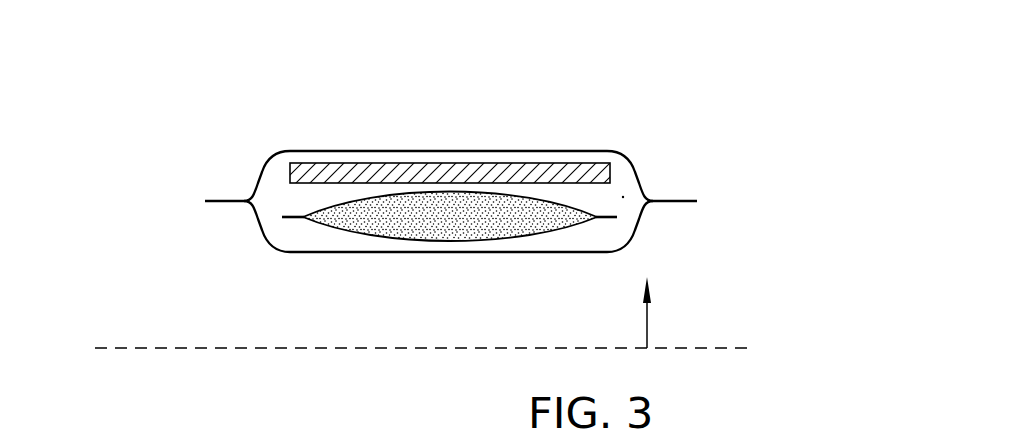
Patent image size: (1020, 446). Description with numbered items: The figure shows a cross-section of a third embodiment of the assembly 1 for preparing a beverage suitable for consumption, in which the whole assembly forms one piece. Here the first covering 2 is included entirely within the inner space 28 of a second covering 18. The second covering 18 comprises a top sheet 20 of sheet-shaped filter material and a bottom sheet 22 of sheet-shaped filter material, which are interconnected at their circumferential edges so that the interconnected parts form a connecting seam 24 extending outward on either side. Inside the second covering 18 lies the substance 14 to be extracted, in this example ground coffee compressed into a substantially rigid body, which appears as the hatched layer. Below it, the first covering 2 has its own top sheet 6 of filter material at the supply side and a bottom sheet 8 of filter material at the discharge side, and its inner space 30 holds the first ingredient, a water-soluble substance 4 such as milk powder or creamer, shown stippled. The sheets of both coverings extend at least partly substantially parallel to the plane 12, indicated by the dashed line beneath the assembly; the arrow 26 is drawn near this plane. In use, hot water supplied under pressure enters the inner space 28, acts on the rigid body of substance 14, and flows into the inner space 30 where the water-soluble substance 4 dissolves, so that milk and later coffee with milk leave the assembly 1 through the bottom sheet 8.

The assembly 1 is at (765, 313).
The first covering 2 is at (573, 227).
The water-soluble substance 4 is at (515, 222).
The top sheet 6 is at (318, 209).
The bottom sheet 8 is at (328, 226).
The plane 12 is at (357, 349).
The substance to be extracted 14 is at (317, 172).
The second covering 18 is at (548, 151).
The top sheet 20 is at (606, 152).
The bottom sheet 22 is at (633, 238).
The connecting seam 24 is at (679, 199).
The direction arrow 26 is at (650, 323).
The inner space 28 is at (623, 197).
The inner space 30 is at (397, 220).